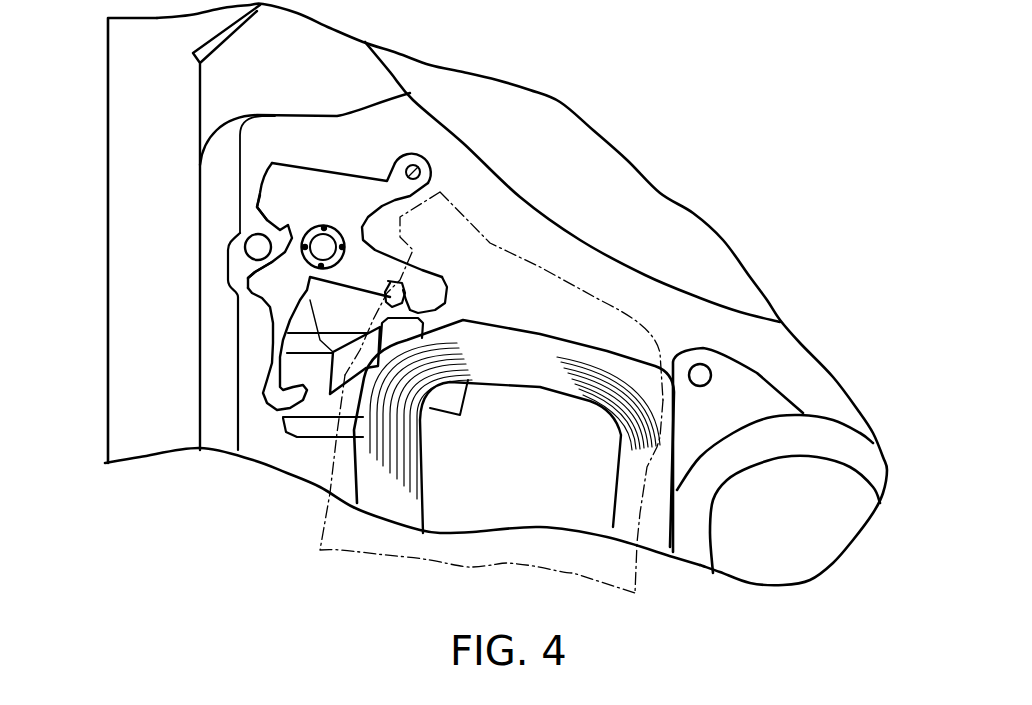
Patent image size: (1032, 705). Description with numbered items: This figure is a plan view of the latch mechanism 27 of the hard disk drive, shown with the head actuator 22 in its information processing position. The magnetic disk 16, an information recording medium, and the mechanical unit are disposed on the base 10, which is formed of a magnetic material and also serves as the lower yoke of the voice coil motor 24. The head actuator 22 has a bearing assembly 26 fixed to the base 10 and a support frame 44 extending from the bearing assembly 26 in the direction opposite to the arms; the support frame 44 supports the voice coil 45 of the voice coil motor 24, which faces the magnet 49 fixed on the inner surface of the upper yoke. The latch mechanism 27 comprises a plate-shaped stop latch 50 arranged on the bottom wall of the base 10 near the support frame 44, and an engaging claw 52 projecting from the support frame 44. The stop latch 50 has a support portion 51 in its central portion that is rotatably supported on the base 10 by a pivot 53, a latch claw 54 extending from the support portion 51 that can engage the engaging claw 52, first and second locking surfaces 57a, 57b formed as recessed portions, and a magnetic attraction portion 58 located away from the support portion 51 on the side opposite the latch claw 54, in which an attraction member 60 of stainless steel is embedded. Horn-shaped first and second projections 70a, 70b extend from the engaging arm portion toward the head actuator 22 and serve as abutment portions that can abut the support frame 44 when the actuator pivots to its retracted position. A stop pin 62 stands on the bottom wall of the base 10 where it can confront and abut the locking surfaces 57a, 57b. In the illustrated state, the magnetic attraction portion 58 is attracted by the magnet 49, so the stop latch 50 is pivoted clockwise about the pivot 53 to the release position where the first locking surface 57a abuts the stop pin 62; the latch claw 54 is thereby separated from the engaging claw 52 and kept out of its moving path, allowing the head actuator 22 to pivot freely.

The base 10 is at (113, 115).
The magnetic disk 16 is at (556, 112).
The head actuator 22 is at (817, 387).
The voice coil motor 24 is at (316, 545).
The bearing assembly 26 is at (840, 543).
The latch mechanism 27 is at (234, 338).
The support frame 44 is at (483, 330).
The voice coil 45 is at (530, 356).
The magnet 49 is at (600, 298).
The stop latch 50 is at (268, 188).
The support portion 51 is at (325, 227).
The engaging claw 52 is at (350, 378).
The pivot 53 is at (342, 233).
The latch claw 54 is at (267, 378).
The first locking surface 57a is at (246, 267).
The second locking surface 57b is at (262, 217).
The magnetic attraction portion 58 is at (405, 156).
The attraction member 60 is at (420, 172).
The stop pin 62 is at (246, 245).
The first projection 70a is at (418, 305).
The second projection 70b is at (397, 300).